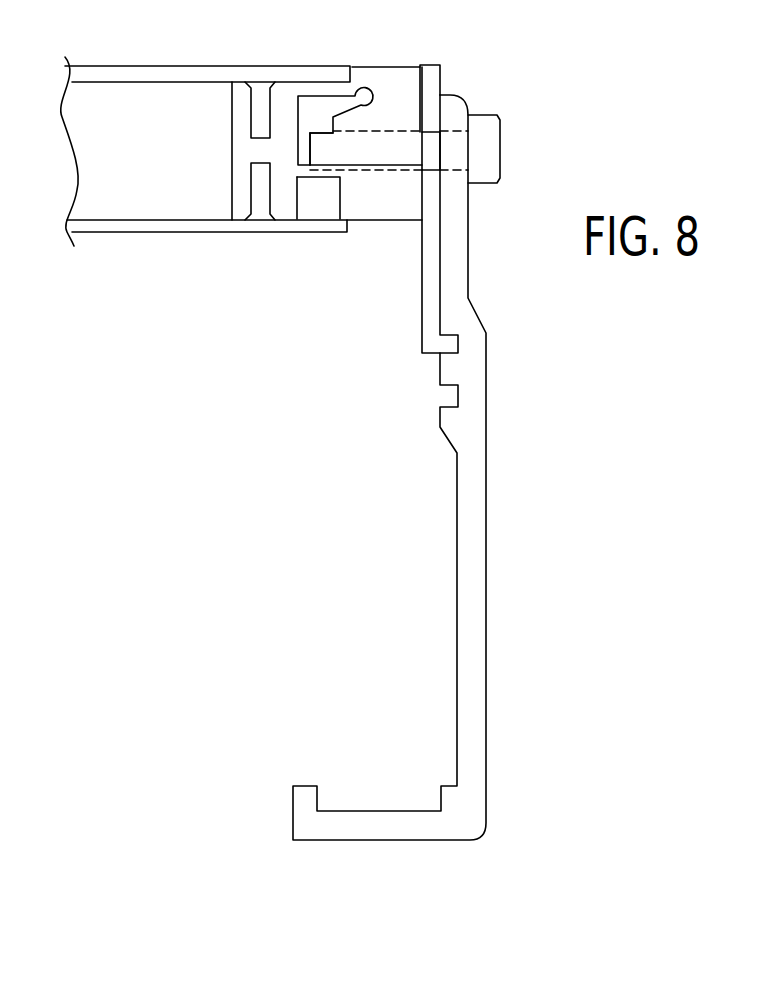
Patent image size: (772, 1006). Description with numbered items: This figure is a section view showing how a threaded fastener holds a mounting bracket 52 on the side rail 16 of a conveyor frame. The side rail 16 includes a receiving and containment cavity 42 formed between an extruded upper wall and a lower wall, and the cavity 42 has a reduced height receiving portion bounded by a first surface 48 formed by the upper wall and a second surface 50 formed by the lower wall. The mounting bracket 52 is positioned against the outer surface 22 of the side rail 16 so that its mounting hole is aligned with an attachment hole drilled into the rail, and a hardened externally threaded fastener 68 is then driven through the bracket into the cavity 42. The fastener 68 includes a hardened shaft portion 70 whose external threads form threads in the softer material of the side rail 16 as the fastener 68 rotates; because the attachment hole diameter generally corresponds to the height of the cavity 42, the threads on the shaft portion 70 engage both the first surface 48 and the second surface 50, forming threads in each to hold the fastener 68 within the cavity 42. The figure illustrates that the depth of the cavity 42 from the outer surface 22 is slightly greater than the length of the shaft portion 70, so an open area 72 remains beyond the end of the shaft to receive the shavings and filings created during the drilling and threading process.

The side rail 16 is at (428, 302).
The outer surface 22 is at (440, 80).
The receiving and containment cavity 42 is at (320, 108).
The first surface 48 is at (370, 133).
The second surface 50 is at (355, 167).
The mounting bracket 52 is at (470, 430).
The hardened externally threaded fastener 68 is at (398, 128).
The shaft portion 70 is at (392, 152).
The open area 72 is at (303, 147).